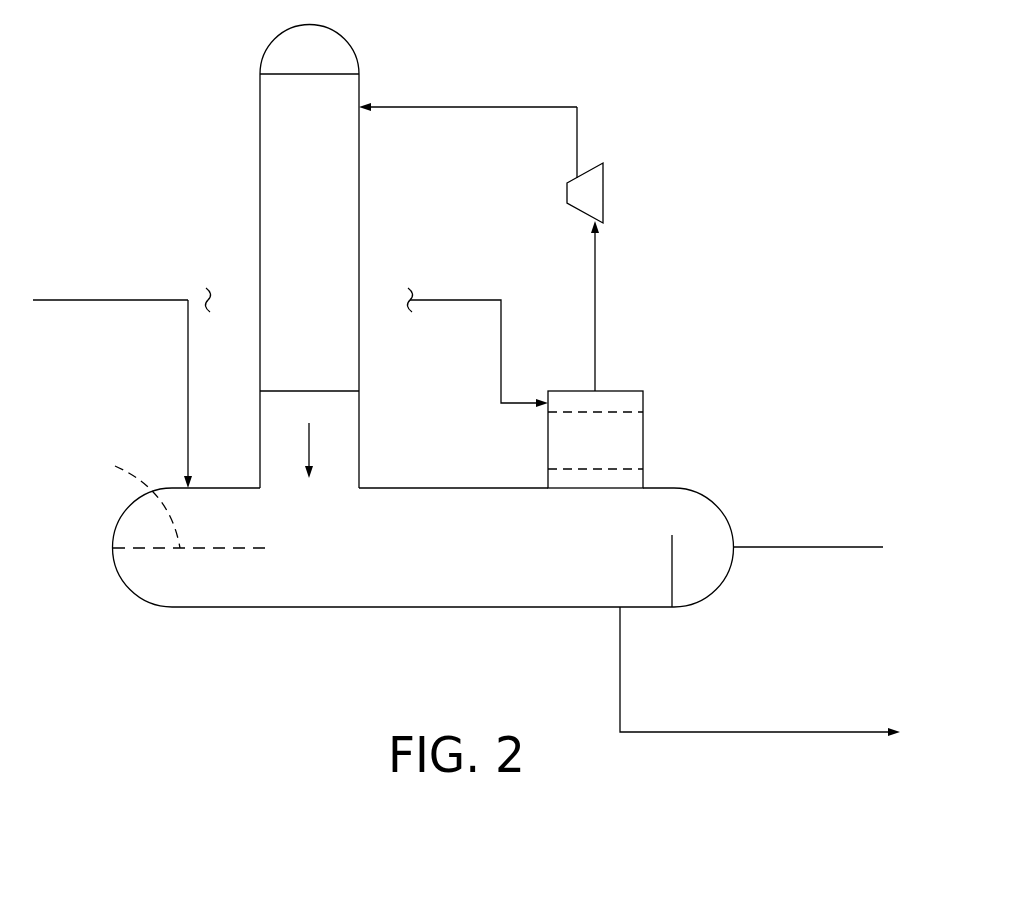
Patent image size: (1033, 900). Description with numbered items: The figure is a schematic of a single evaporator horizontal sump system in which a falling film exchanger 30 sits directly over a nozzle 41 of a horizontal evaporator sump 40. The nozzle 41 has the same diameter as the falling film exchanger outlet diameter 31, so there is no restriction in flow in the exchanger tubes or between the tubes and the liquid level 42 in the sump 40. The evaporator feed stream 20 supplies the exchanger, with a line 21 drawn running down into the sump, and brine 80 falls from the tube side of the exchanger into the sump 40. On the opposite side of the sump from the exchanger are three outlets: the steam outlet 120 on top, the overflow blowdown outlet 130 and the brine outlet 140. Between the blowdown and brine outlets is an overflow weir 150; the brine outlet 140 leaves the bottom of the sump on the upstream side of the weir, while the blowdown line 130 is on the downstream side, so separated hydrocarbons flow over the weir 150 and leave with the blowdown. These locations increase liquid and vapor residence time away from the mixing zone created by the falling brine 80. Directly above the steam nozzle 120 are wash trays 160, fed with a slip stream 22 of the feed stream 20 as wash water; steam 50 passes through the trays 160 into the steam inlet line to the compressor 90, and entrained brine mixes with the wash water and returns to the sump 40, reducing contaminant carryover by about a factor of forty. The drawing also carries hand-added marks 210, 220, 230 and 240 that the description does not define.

The evaporator feed stream 20 is at (156, 300).
The makeup feed pipe 21 is at (185, 402).
The slip stream 22 is at (442, 300).
The falling film exchanger 30 is at (277, 167).
The falling film exchanger outlet diameter 31 is at (342, 373).
The evaporator sump 40 is at (128, 613).
The nozzle 41 is at (342, 413).
The liquid level 42 is at (132, 501).
The steam 50 is at (596, 302).
The brine 80 is at (310, 441).
The compressor 90 is at (588, 162).
The steam outlet 120 is at (575, 480).
The overflow blowdown outlet 130 is at (780, 547).
The brine outlet 140 is at (732, 732).
The overflow weir 150 is at (670, 555).
The wash trays 160 is at (645, 440).
The sump liquid level 210 is at (113, 528).
The blowdown nozzle 220 is at (728, 522).
The sump bottom 230 is at (532, 610).
The sump top 240 is at (405, 488).